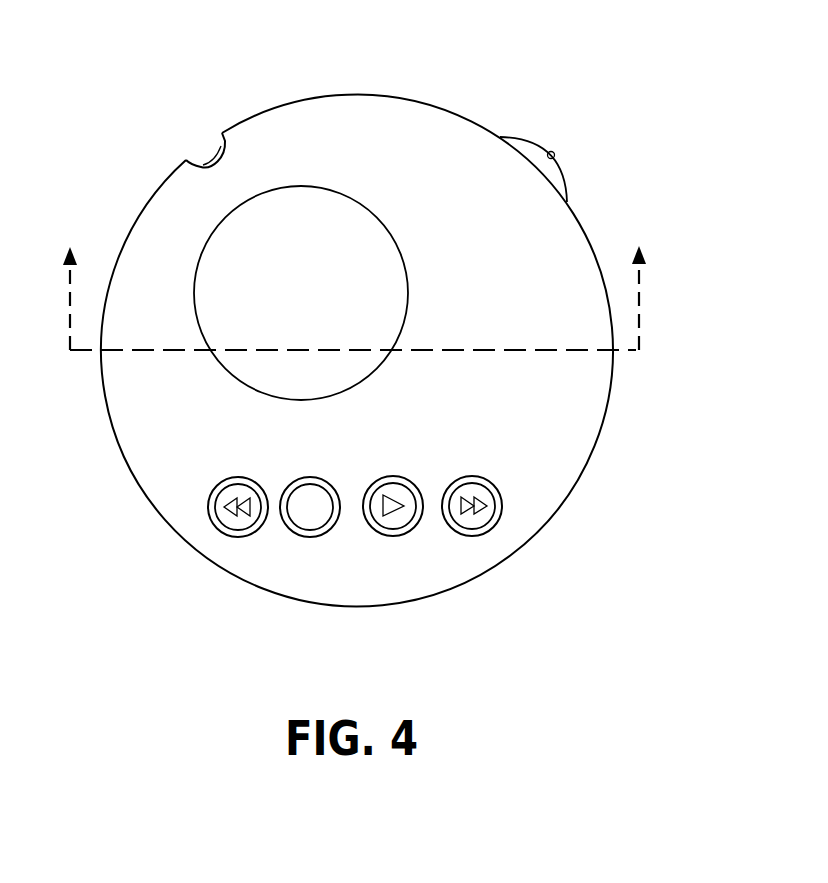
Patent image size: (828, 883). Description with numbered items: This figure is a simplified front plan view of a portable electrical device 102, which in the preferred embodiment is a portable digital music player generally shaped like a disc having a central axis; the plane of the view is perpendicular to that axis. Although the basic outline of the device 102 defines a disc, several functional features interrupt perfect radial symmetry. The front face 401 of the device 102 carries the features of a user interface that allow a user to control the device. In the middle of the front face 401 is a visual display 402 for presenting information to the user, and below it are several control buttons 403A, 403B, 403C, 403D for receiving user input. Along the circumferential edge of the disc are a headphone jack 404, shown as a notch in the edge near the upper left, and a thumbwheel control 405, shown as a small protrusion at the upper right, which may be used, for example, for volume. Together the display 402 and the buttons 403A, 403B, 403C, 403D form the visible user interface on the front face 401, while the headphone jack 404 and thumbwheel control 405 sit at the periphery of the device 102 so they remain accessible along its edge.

The portable electrical device 102 is at (445, 70).
The front face 401 is at (532, 216).
The visual display 402 is at (365, 261).
The control button 403A is at (218, 530).
The control button 403B is at (296, 534).
The control button 403C is at (394, 536).
The control button 403D is at (486, 533).
The headphone jack 404 is at (208, 150).
The thumbwheel control 405 is at (557, 160).